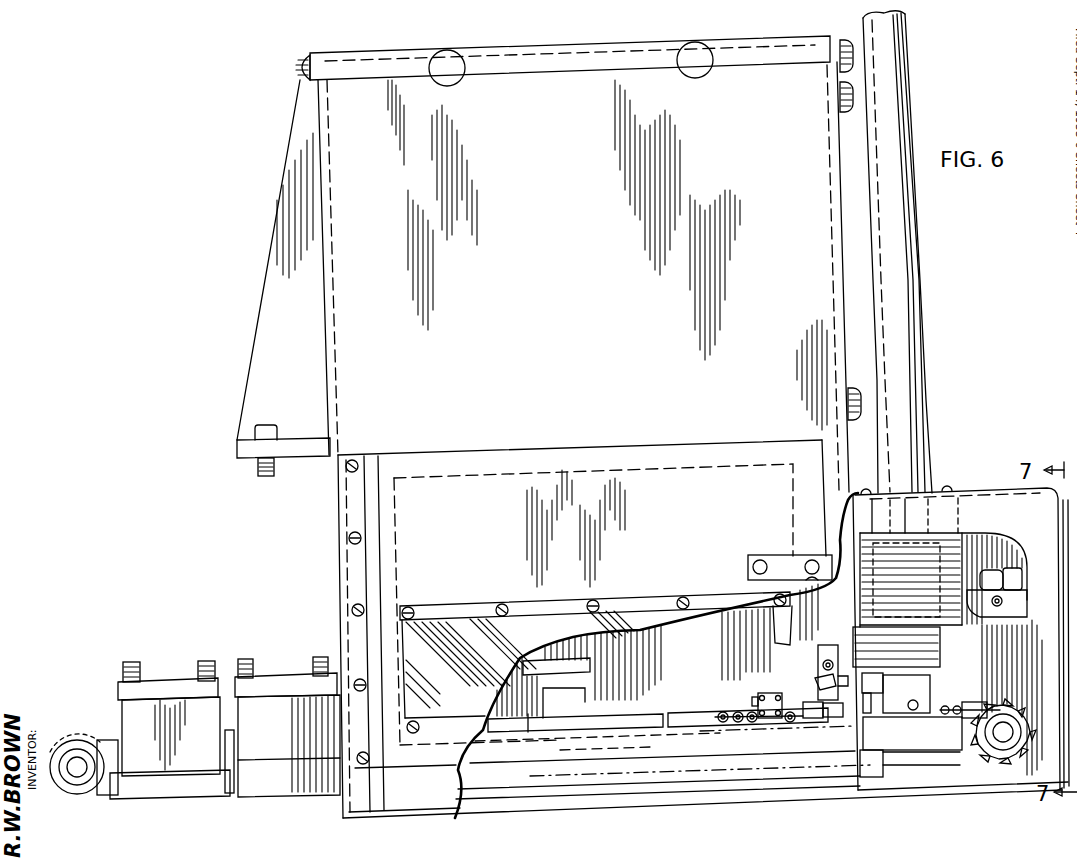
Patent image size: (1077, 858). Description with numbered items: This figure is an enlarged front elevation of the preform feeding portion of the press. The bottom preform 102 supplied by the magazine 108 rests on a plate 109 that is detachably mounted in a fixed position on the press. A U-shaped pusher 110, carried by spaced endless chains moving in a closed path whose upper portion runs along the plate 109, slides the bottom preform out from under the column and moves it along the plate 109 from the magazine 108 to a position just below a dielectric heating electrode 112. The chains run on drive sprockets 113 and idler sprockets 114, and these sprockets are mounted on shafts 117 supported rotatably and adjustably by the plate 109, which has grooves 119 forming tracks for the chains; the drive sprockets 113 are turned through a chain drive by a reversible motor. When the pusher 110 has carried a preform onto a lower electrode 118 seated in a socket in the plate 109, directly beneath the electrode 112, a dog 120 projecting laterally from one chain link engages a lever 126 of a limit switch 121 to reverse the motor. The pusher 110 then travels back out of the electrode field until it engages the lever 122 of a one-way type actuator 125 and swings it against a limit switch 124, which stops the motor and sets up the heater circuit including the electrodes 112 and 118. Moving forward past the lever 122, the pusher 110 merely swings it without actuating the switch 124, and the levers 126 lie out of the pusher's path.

The preform 102 is at (576, 709).
The magazine 108 is at (920, 450).
The plate 109 is at (676, 713).
The U-shaped pusher 110 is at (754, 695).
The dielectric heating electrode 112 is at (548, 662).
The drive sprocket 113 is at (1020, 720).
The idler sprocket 114 is at (87, 743).
The shaft 117 is at (1008, 735).
The lower electrode 118 is at (573, 722).
The groove 119 is at (685, 722).
The dog 120 is at (947, 654).
The limit switch 121 is at (877, 722).
The lever 122 is at (820, 680).
The limit switch 124 is at (824, 645).
The one-way type actuator 125 is at (818, 640).
The lever 126 is at (815, 720).